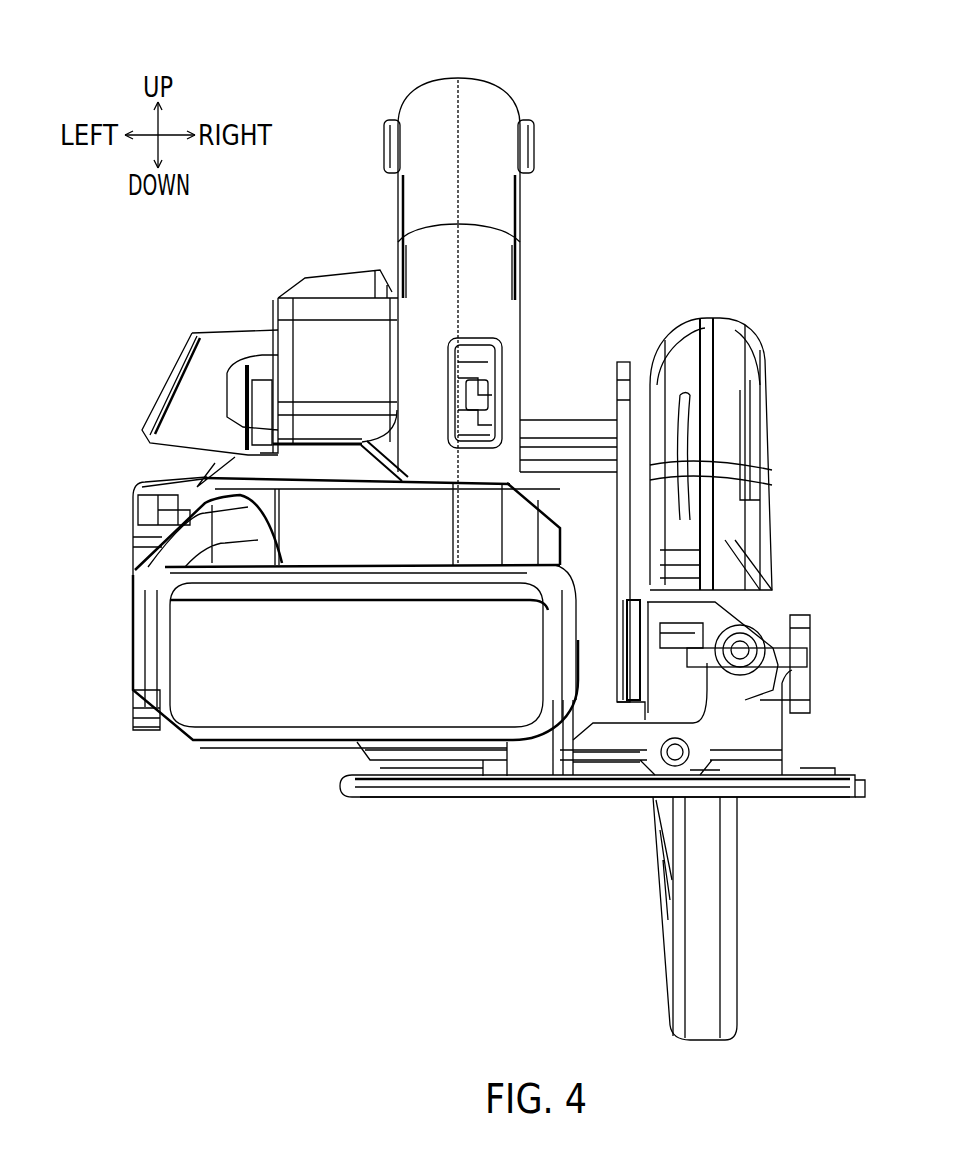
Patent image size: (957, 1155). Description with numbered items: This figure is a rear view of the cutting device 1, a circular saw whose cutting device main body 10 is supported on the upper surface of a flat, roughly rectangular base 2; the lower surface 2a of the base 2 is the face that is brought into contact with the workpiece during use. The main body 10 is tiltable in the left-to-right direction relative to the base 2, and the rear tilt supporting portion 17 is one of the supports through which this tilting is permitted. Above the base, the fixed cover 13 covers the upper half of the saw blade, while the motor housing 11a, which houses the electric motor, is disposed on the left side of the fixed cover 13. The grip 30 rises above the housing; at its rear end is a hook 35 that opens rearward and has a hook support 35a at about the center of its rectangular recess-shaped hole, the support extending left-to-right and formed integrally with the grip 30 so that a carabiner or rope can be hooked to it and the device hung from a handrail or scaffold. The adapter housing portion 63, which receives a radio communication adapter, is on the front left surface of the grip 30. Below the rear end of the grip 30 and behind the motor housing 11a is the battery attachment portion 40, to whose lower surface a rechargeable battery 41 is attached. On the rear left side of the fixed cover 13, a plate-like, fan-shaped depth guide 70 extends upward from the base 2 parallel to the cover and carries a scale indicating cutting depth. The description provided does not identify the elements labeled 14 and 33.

The cutting device 1 is at (746, 96).
The base 2 is at (852, 772).
The lower surface 2a is at (812, 800).
The cutting device main body 10 is at (562, 192).
The motor housing 11a is at (140, 478).
The fixed cover 13 is at (752, 355).
The saw blade 14 is at (729, 976).
The rear tilt supporting portion 17 is at (670, 764).
The grip 30 is at (497, 70).
The handle side protrusion 33 is at (534, 130).
The hook 35 is at (488, 369).
The hook support 35a is at (470, 400).
The battery attachment portion 40 is at (353, 573).
The rechargeable battery 41 is at (192, 740).
The adapter housing portion 63 is at (305, 277).
The depth guide 70 is at (620, 362).